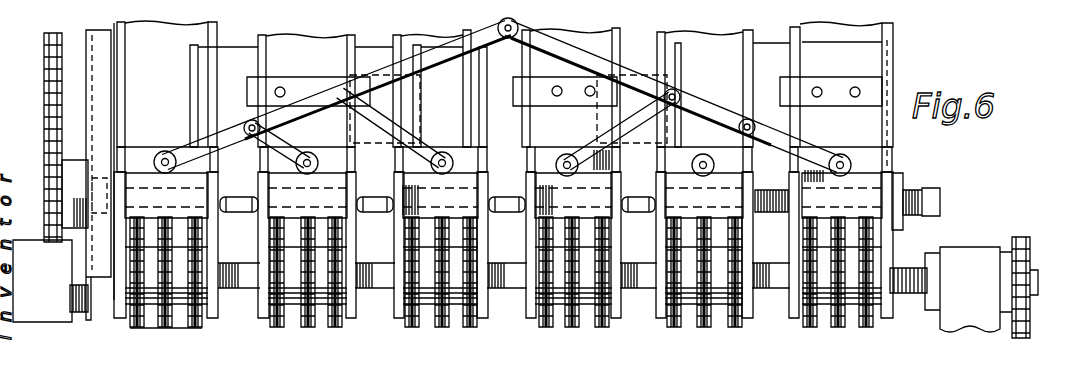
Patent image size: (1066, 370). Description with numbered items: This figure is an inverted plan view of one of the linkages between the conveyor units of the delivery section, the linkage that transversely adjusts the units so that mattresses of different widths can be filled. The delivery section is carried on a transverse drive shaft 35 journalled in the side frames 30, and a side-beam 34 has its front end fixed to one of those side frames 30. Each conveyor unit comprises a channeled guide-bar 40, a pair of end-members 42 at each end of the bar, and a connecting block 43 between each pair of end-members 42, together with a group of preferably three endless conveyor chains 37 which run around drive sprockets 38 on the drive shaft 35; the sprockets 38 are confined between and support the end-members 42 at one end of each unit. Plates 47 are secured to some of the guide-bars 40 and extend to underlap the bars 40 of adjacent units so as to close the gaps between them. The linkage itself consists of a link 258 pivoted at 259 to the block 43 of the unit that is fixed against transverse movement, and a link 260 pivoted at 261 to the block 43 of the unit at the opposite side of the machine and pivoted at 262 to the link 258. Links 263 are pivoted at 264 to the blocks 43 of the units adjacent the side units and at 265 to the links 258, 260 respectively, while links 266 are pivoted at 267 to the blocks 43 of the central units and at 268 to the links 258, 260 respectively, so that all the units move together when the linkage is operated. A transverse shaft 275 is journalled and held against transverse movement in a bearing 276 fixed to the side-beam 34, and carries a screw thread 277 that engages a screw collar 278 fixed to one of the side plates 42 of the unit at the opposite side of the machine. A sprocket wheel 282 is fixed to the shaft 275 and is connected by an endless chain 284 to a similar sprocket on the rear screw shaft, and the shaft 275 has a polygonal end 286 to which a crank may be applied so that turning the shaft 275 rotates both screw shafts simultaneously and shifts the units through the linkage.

The side frames 30 is at (977, 253).
The side-beam 34 is at (100, 33).
The transverse drive shaft 35 is at (235, 266).
The endless conveyor chains 37 is at (203, 327).
The drive sprockets 38 is at (413, 257).
The channeled guide-bar 40 is at (185, 27).
The end-members 42 is at (398, 235).
The connecting block 43 is at (159, 183).
The plates 47 is at (910, 60).
The link 258 is at (336, 95).
The pivot 259 is at (163, 147).
The link 260 is at (674, 97).
The pivot 261 is at (851, 163).
The pivot 262 is at (518, 26).
The links 263 is at (287, 153).
The pivot 264 is at (307, 153).
The pivot 265 is at (250, 126).
The links 266 is at (415, 130).
The pivot 267 is at (519, 172).
The pivot 268 is at (683, 92).
The transverse shaft 275 is at (436, 190).
The bearing 276 is at (72, 167).
The screw thread 277 is at (772, 190).
The screw collar 278 is at (928, 186).
The sprocket wheel 282 is at (45, 183).
The endless chain 284 is at (44, 72).
The polygonal end 286 is at (940, 192).